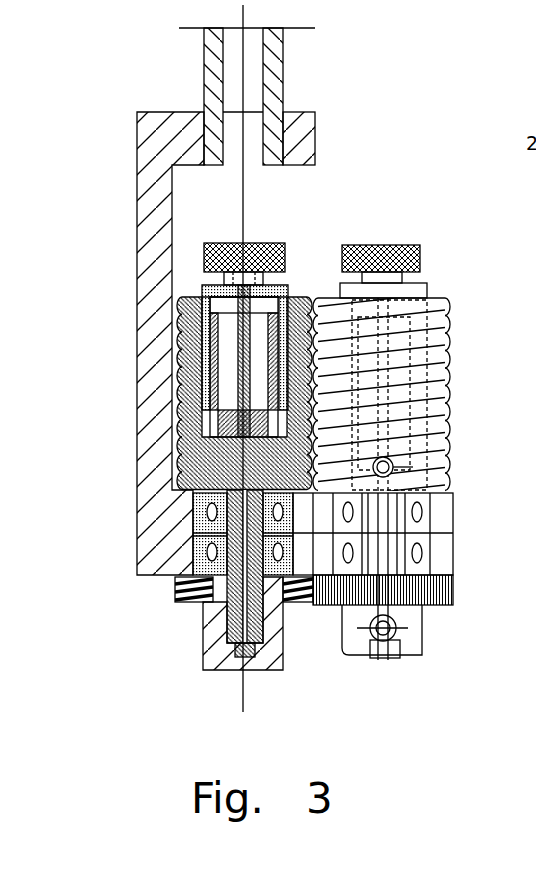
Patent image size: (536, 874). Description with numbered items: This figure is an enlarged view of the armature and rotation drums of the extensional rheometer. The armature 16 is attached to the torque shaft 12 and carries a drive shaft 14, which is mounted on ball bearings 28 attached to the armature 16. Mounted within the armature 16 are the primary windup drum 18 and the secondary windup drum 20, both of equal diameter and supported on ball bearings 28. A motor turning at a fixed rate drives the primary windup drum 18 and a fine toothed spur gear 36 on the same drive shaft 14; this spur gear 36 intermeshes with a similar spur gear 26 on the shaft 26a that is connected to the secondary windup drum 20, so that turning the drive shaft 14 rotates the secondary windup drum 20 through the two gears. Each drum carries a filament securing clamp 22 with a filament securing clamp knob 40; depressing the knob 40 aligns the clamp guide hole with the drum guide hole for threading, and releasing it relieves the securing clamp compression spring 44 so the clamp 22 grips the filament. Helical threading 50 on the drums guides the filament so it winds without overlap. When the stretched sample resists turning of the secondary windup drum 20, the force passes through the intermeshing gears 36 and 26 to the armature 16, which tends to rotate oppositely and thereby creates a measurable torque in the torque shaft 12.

The torque shaft 12 is at (285, 70).
The armature 16 is at (137, 140).
The filament securing clamp knob 40 is at (207, 243).
The filament securing clamp 22 is at (202, 287).
The securing clamp compression spring 44 is at (238, 305).
The primary windup drum 18 is at (303, 297).
The ball bearings 28 is at (194, 530).
The spur gear 36 is at (175, 590).
The drive shaft 14 is at (215, 660).
The secondary windup drum 20 is at (433, 298).
The helical threading 50 is at (445, 377).
The spur gear 26 is at (453, 605).
The shaft 26a is at (397, 560).